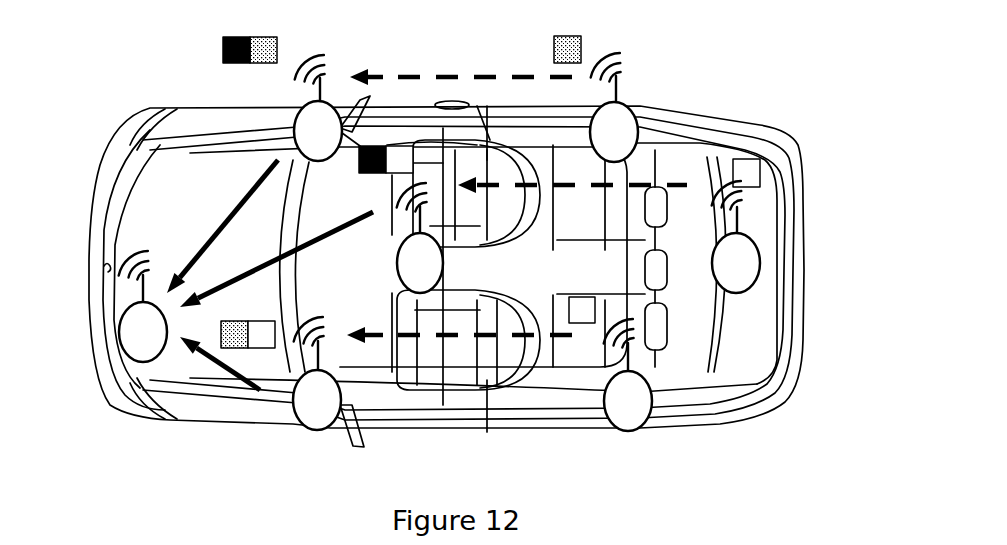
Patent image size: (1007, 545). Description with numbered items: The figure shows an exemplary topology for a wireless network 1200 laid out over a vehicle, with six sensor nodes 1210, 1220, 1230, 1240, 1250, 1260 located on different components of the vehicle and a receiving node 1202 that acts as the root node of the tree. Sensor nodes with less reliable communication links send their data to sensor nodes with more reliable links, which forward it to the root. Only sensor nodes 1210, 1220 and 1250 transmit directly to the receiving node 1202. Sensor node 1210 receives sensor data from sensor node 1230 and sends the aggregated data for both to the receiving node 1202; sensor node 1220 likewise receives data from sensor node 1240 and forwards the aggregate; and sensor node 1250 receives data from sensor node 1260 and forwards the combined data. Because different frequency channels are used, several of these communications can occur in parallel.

The wireless network 1200 is at (760, 58).
The receiving node 1202 is at (133, 358).
The sensor node 1210 is at (328, 101).
The sensor node 1220 is at (303, 428).
The sensor node 1230 is at (627, 102).
The sensor node 1240 is at (640, 428).
The sensor node 1250 is at (397, 260).
The sensor node 1260 is at (747, 285).